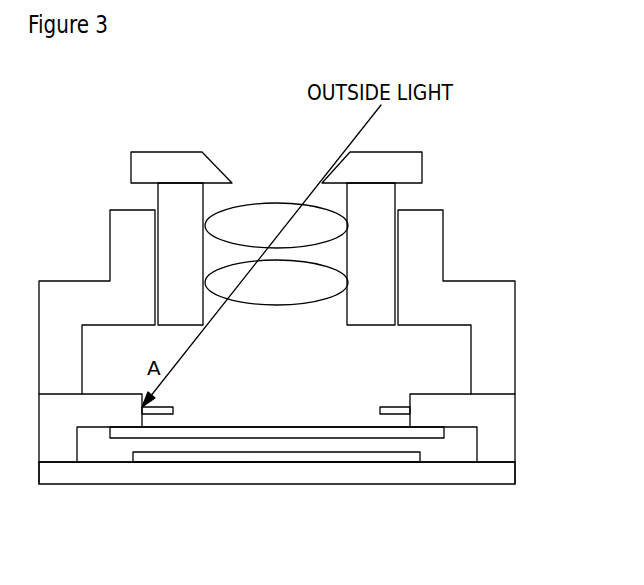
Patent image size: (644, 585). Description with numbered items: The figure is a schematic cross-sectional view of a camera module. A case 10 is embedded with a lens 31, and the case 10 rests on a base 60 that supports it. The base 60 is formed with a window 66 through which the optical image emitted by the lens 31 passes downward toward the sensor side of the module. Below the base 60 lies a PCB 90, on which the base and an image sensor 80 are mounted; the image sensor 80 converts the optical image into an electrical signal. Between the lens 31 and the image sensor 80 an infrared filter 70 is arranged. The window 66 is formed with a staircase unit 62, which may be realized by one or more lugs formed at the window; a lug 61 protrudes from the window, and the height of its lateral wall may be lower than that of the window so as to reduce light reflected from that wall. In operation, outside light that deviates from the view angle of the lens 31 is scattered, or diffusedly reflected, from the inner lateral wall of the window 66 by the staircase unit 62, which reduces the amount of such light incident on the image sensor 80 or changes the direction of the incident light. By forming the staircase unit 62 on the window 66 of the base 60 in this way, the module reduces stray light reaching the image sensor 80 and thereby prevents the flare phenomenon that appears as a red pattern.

The case 10 is at (502, 343).
The lens 31 is at (338, 227).
The base 60 is at (503, 432).
The lug 61 is at (171, 408).
The staircase unit 62 is at (403, 397).
The window 66 is at (290, 407).
The infrared filter 70 is at (295, 430).
The image sensor 80 is at (368, 455).
The PCB 90 is at (443, 475).